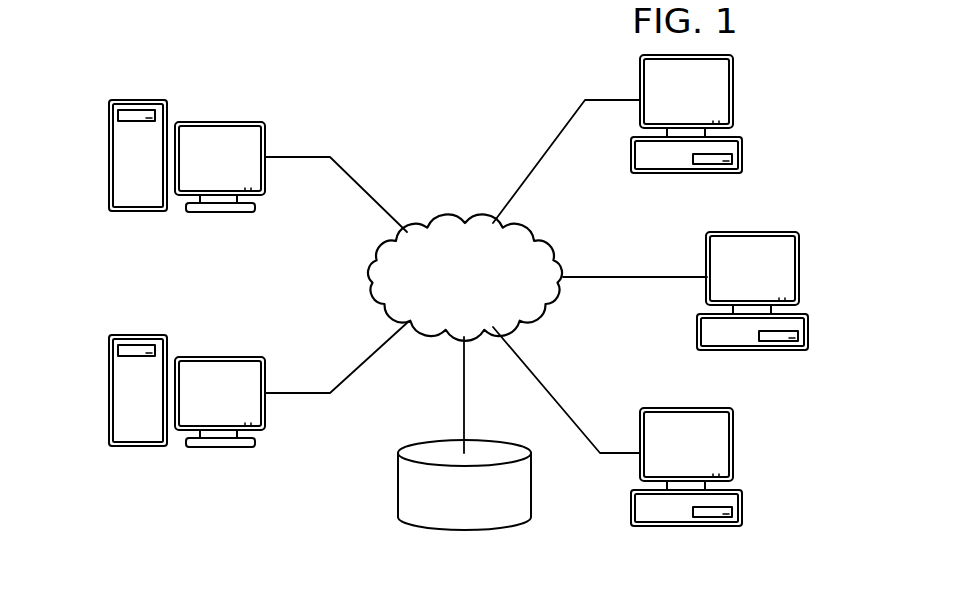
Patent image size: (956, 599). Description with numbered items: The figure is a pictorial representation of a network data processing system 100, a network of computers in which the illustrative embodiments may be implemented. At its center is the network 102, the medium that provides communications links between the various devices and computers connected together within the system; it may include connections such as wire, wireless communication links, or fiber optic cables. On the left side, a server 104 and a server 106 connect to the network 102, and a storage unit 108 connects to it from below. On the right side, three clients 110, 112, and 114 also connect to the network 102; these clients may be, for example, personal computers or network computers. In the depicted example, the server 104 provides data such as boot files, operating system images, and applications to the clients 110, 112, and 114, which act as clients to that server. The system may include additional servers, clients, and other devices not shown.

The network data processing system 100 is at (334, 64).
The network 102 is at (455, 218).
The server 104 is at (110, 155).
The server 106 is at (110, 389).
The storage unit 108 is at (398, 487).
The client 110 is at (742, 155).
The client 112 is at (807, 333).
The client 114 is at (740, 510).